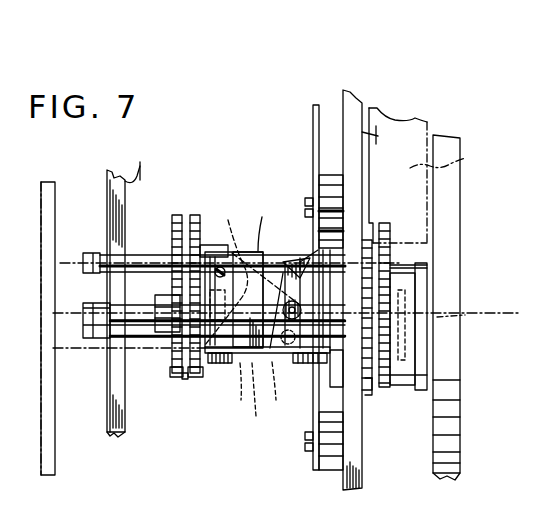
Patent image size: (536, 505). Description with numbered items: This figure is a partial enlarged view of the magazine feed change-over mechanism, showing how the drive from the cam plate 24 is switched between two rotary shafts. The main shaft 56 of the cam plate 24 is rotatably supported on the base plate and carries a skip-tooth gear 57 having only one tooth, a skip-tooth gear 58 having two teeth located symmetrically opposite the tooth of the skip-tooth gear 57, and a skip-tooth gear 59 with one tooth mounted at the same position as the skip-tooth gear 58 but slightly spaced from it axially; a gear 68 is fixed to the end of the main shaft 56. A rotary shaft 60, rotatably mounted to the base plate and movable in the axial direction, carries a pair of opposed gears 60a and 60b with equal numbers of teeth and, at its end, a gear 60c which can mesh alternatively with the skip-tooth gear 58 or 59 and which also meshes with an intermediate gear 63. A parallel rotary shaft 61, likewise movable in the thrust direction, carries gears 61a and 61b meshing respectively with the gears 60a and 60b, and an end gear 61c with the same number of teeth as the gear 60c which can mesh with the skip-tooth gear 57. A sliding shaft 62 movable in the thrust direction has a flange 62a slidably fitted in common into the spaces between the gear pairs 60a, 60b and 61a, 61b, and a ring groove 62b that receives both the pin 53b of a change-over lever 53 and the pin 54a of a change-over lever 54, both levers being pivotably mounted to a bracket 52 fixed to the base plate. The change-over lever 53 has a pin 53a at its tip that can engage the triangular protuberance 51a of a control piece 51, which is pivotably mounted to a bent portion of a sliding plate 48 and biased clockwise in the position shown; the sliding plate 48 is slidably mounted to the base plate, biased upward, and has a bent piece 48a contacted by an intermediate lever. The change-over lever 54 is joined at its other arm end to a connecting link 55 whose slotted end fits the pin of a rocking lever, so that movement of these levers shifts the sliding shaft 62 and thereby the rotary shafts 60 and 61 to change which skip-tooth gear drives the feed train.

The cam plate 24 is at (452, 211).
The sliding plate 48 is at (313, 120).
The bent piece 48a is at (328, 178).
The control piece 51 is at (283, 257).
The triangular protuberance 51a is at (311, 256).
The bracket 52 is at (266, 250).
The change-over lever 53 is at (232, 257).
The pin 53a is at (285, 391).
The pin 53b is at (232, 272).
The change-over lever 54 is at (222, 364).
The pin 54a is at (232, 392).
The connecting link 55 is at (280, 363).
The main shaft 56 is at (125, 416).
The skip-tooth gear 57 is at (421, 395).
The skip-tooth gear 58 is at (368, 390).
The skip-tooth gear 59 is at (368, 400).
The rotary shaft 60 is at (148, 257).
The gear 60a is at (174, 217).
The gear 60b is at (197, 216).
The gear 60c is at (388, 223).
The rotary shaft 61 is at (157, 334).
The gear 61a is at (175, 379).
The gear 61b is at (195, 379).
The gear 61c is at (450, 325).
The sliding shaft 62 is at (97, 303).
The flange 62a is at (184, 380).
The ring groove 62b is at (268, 400).
The intermediate gear 63 is at (454, 153).
The gear 68 is at (48, 340).